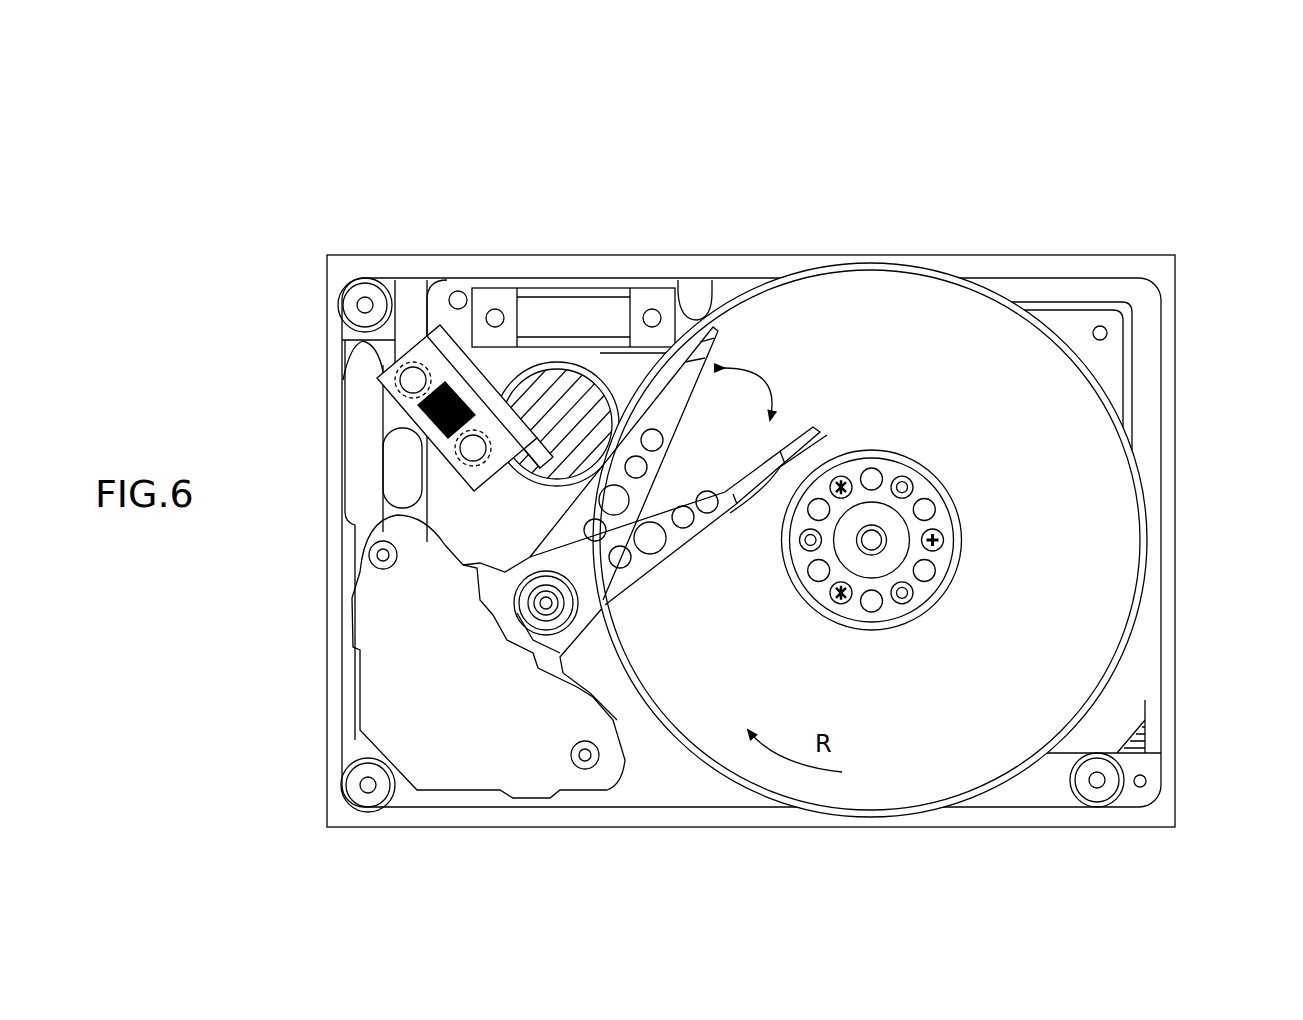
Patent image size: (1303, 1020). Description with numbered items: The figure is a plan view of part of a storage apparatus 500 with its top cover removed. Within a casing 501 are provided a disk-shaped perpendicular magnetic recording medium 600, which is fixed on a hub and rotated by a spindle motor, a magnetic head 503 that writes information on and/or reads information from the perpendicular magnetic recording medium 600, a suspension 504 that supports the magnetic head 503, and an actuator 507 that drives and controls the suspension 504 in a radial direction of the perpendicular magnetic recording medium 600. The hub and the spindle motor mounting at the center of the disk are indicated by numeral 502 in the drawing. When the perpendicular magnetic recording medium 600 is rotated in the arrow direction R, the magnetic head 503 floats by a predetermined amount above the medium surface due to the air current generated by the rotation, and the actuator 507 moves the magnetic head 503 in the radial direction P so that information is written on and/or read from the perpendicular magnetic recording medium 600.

The storage apparatus 500 is at (1114, 144).
The casing 501 is at (996, 254).
The spindle motor 502 is at (893, 538).
The magnetic head 503 is at (820, 430).
The suspension 504 is at (765, 487).
The actuator 507 is at (437, 757).
The perpendicular magnetic recording medium 600 is at (1100, 485).